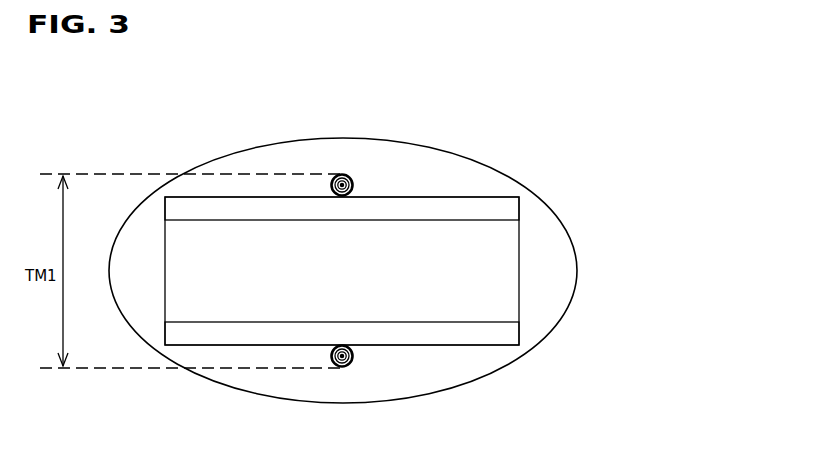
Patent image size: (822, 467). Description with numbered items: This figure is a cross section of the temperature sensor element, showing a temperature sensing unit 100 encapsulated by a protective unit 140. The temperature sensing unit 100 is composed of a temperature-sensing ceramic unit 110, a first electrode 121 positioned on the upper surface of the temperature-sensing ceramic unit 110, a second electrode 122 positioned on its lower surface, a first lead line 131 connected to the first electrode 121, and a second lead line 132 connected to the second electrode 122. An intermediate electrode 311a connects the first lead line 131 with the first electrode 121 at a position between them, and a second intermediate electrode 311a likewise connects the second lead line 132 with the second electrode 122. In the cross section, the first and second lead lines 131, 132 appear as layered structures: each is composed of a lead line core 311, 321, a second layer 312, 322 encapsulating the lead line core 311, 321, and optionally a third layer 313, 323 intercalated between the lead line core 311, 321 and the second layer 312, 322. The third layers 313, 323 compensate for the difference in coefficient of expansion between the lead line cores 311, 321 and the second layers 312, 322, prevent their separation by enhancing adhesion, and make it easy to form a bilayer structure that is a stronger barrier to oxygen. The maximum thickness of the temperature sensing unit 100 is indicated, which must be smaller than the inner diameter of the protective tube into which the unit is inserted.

The temperature sensing unit 100 is at (683, 130).
The temperature-sensing ceramic unit 110 is at (427, 269).
The first electrode 121 is at (521, 208).
The second electrode 122 is at (507, 337).
The first lead line 131 is at (500, 225).
The second lead line 132 is at (502, 393).
The protective unit 140 is at (275, 143).
The lead line core 311 is at (350, 177).
The intermediate electrode 311a is at (352, 187).
The second layer 312 is at (350, 183).
The third layer 313 is at (350, 180).
The lead line core 321 is at (353, 358).
The second layer 322 is at (352, 365).
The third layer 323 is at (353, 363).